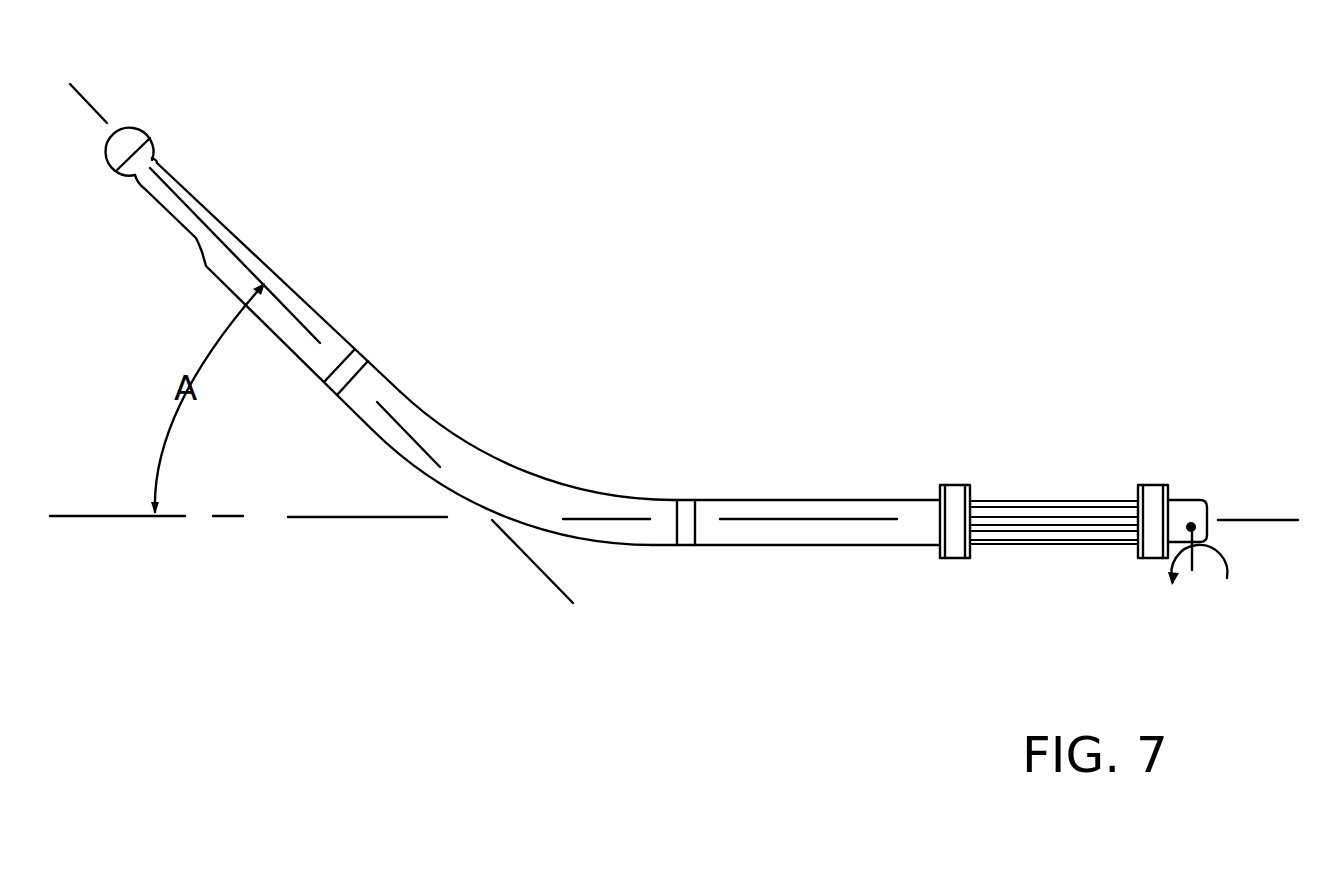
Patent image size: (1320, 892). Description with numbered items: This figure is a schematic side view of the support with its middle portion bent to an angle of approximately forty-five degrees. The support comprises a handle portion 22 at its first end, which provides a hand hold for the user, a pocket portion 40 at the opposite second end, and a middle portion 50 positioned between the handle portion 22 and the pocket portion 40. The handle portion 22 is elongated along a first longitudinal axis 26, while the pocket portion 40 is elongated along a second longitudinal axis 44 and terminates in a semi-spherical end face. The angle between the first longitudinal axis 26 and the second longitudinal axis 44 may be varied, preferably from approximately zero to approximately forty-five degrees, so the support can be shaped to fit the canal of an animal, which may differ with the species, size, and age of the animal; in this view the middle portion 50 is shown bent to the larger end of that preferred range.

The handle portion 22 is at (865, 500).
The first longitudinal axis 26 is at (811, 521).
The pocket portion 40 is at (273, 270).
The second longitudinal axis 44 is at (300, 320).
The middle portion 50 is at (478, 450).